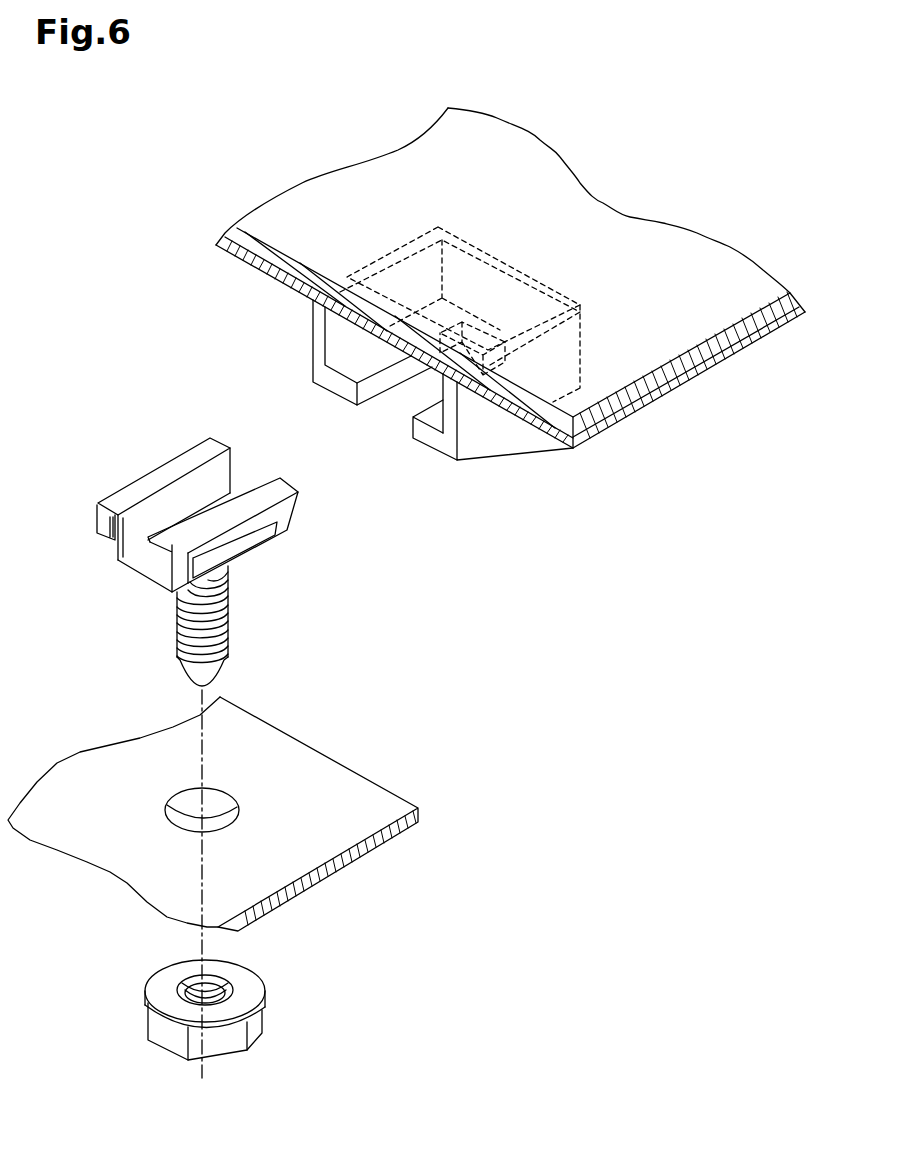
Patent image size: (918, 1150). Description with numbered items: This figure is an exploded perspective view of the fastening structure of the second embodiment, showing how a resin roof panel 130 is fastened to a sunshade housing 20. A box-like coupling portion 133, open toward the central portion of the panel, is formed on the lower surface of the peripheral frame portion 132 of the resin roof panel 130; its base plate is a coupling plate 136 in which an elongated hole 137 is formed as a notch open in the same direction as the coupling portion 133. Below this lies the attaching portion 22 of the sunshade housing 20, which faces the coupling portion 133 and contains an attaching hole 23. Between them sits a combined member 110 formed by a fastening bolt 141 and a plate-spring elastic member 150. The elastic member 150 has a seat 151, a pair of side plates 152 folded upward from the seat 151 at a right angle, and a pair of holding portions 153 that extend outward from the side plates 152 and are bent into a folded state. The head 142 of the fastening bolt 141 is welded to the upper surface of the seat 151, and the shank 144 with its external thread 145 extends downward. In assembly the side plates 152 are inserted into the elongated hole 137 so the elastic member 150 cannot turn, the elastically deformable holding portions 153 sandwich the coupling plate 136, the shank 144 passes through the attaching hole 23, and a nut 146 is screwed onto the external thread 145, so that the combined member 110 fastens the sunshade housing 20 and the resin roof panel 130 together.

The resin roof panel 130 is at (303, 181).
The peripheral frame portion 132 is at (280, 281).
The coupling portion 133 is at (484, 450).
The coupling plate 136 is at (432, 441).
The elongated hole 137 is at (400, 404).
The combined member 110 is at (172, 454).
The head 142 is at (229, 497).
The elastic member 150 is at (126, 582).
The seat 151 is at (150, 568).
The side plate 152 is at (118, 567).
The holding portion 153 is at (100, 547).
The fastening bolt 141 is at (230, 629).
The shank 144 is at (285, 614).
The external thread 145 is at (221, 613).
The sunshade housing 20 is at (229, 814).
The attaching portion 22 is at (340, 783).
The attaching hole 23 is at (216, 828).
The nut 146 is at (253, 1028).